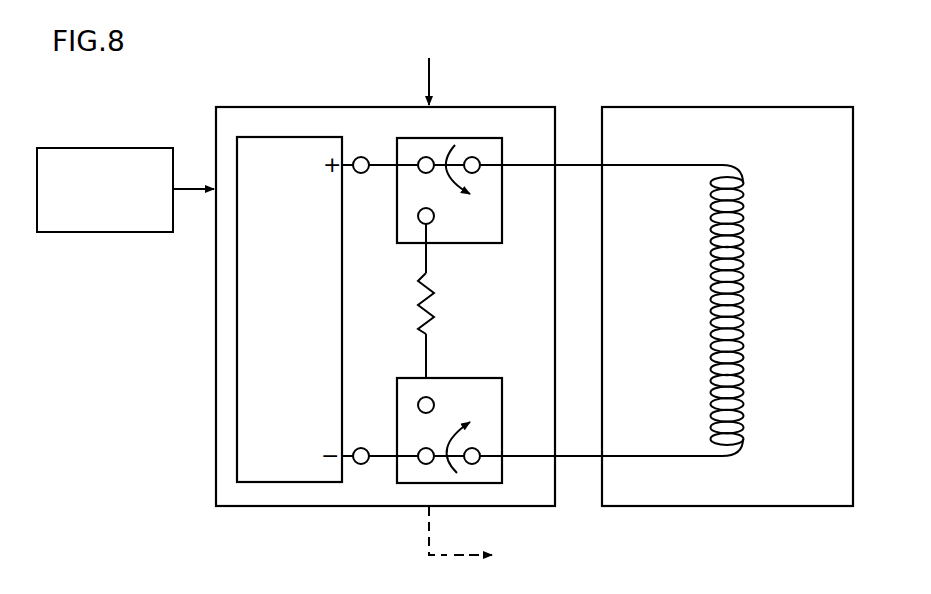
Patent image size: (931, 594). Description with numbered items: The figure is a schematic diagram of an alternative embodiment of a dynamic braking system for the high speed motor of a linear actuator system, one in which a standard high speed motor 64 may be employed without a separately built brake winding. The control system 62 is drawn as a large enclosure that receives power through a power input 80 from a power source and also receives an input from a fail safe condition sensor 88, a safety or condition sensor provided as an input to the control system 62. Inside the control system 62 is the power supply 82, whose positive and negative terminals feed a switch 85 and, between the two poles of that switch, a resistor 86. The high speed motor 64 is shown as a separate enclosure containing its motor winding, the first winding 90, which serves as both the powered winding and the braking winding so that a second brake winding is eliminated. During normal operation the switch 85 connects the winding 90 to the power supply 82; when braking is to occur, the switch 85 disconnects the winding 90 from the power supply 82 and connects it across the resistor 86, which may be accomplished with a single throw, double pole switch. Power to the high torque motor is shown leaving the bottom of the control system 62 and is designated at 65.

The control system 62 is at (497, 106).
The high speed motor 64 is at (797, 106).
The power to high torque motor 65 is at (425, 533).
The power input 80 is at (427, 72).
The power supply 82 is at (343, 368).
The switch 85 is at (410, 244).
The resistor 86 is at (440, 289).
The fail safe condition sensor 88 is at (107, 148).
The first winding 90 is at (744, 188).